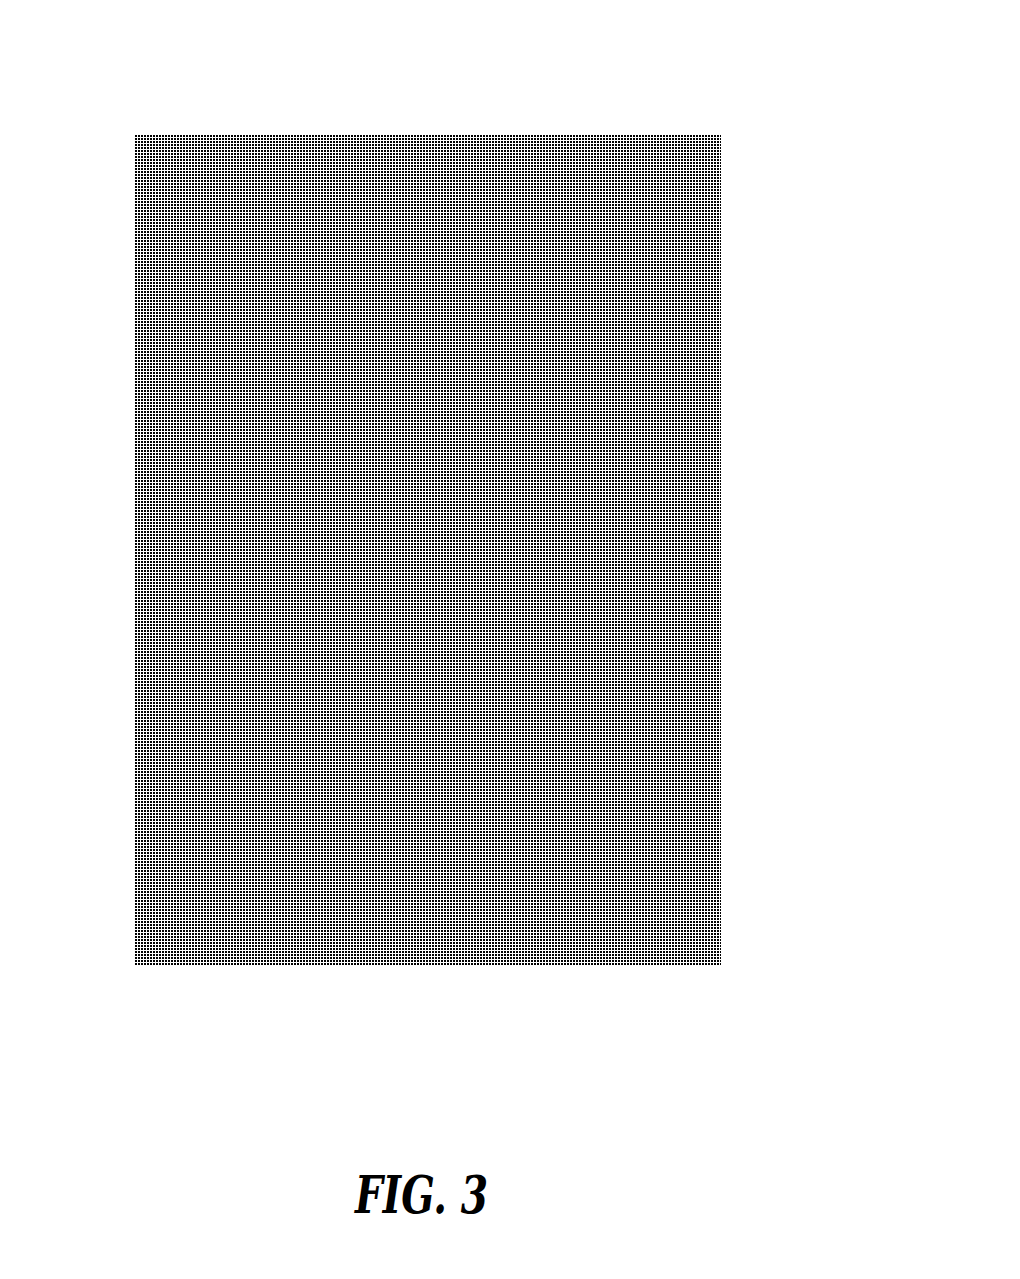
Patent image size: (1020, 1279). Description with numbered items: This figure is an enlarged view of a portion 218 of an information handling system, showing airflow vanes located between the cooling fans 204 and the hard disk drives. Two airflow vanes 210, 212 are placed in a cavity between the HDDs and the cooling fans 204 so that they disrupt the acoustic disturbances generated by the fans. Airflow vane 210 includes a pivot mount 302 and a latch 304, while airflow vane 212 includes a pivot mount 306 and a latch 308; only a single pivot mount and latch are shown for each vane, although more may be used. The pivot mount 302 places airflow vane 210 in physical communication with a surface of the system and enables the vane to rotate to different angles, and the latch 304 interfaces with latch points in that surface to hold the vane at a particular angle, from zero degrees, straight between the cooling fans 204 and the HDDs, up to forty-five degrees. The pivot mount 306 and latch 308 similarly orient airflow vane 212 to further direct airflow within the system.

The portion 218 is at (573, 84).
The cooling fans 204 is at (312, 192).
The pivot mount 302 is at (416, 305).
The latch 304 is at (273, 245).
The airflow vane 210 is at (584, 275).
The airflow vane 212 is at (540, 843).
The pivot mount 306 is at (397, 853).
The latch 308 is at (248, 832).